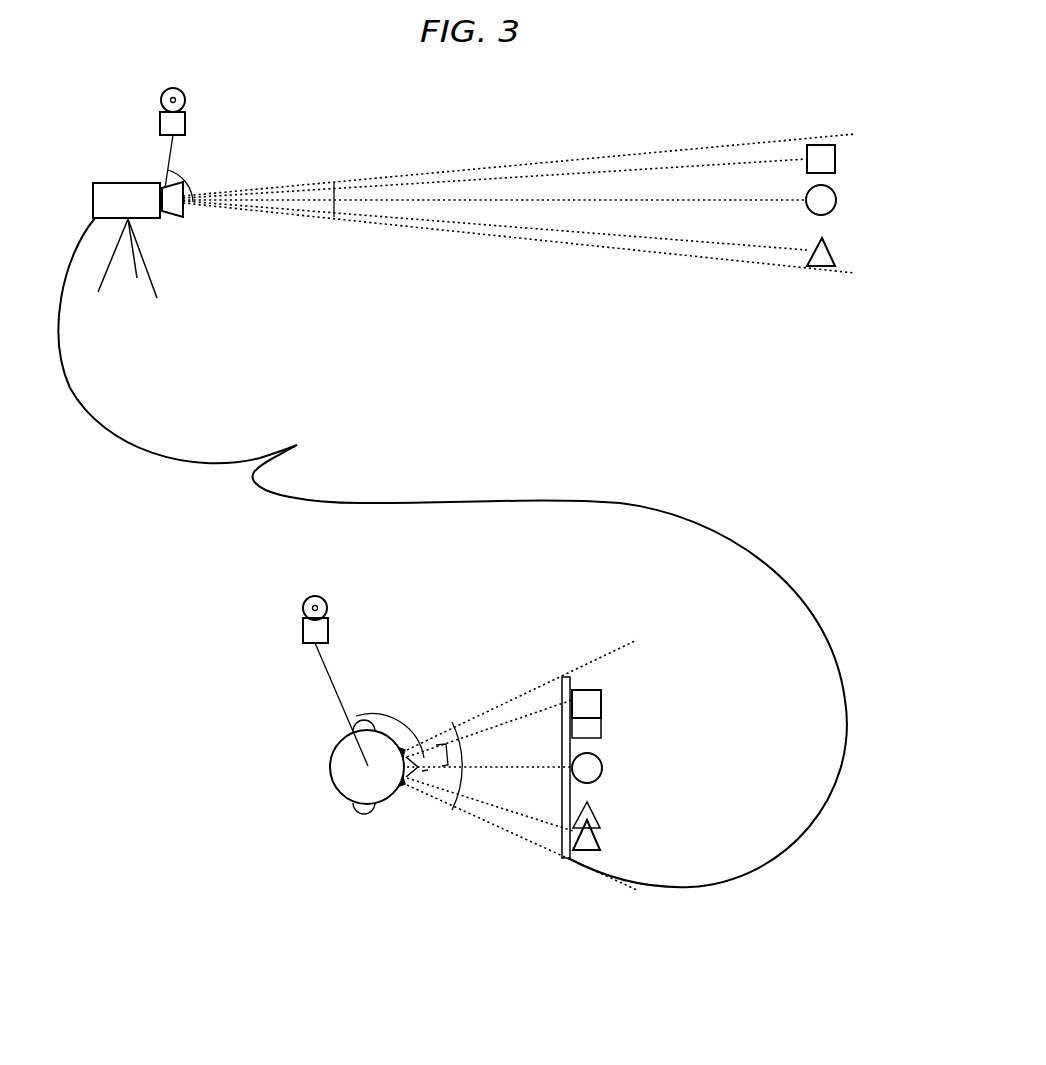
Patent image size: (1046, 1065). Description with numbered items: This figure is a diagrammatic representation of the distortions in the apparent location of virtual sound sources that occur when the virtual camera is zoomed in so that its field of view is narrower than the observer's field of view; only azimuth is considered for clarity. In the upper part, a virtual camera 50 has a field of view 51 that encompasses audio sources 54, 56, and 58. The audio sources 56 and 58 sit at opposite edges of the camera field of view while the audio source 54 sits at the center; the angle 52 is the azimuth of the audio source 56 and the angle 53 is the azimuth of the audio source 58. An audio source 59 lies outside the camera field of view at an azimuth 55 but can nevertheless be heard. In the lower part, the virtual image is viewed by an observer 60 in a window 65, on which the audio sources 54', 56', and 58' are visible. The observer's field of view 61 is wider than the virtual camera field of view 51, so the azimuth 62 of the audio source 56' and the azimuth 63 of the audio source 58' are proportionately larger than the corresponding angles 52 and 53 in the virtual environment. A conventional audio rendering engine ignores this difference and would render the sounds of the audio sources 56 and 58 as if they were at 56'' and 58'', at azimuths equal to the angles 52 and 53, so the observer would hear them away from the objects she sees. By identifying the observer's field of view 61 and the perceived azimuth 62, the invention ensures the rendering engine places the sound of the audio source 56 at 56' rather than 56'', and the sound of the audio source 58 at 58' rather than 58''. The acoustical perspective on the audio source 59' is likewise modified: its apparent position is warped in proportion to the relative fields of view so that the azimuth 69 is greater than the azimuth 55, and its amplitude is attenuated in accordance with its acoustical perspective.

The virtual camera 50 is at (125, 183).
The field of view 51 is at (334, 204).
The angle 52 is at (290, 196).
The angle 53 is at (313, 194).
The audio source 54 is at (844, 196).
The azimuth 55 is at (186, 176).
The audio source 56 is at (844, 248).
The audio source 58 is at (845, 155).
The audio source 59 is at (202, 138).
The audio source 59' is at (347, 678).
The observer 60 is at (330, 768).
The observer's field of view 61 is at (460, 785).
The azimuth 62 is at (422, 771).
The azimuth 63 is at (436, 745).
The window 65 is at (561, 692).
The azimuth 69 is at (365, 717).
The audio source 58' is at (612, 697).
The audio source 58'' is at (616, 724).
The audio source 54' is at (612, 763).
The audio source 56'' is at (611, 809).
The audio source 56' is at (610, 834).